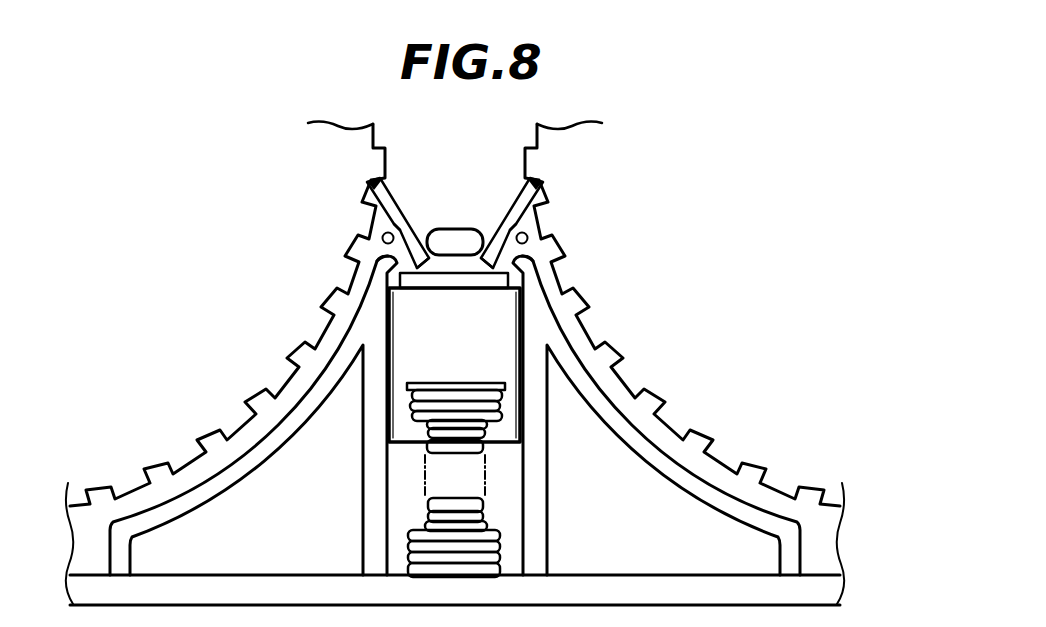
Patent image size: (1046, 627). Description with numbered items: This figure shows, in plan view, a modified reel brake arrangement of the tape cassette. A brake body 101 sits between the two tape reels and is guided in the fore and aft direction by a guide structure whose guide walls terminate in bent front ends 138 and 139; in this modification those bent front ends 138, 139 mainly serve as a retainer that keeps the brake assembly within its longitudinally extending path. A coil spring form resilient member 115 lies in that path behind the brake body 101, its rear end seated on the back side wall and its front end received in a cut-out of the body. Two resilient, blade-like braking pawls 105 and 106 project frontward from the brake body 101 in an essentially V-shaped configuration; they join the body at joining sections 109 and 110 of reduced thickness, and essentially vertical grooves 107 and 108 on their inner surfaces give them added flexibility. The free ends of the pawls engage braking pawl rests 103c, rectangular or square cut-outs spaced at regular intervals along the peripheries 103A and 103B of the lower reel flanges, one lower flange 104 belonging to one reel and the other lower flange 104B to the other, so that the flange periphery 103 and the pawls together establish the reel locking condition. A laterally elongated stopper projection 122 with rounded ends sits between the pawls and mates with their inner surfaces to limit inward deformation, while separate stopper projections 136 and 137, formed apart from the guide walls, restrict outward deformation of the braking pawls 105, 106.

The brake body 101 is at (410, 366).
The arched body 103 is at (541, 468).
The periphery 103A is at (733, 453).
The periphery 103B is at (180, 445).
The braking pawl rest 103c is at (257, 389).
The support column wall 104 is at (373, 510).
The lower flange 104B is at (243, 297).
The braking pawl 105 is at (545, 188).
The braking pawl 106 is at (372, 184).
The groove 107 is at (510, 226).
The groove 108 is at (400, 226).
The joining section 109 is at (488, 264).
The joining section 110 is at (423, 264).
The coil spring form resilient member 115 is at (487, 508).
The stopper projection 122 is at (455, 240).
The stopper projection 136 is at (528, 240).
The stopper projection 137 is at (382, 237).
The bent front end 138 is at (540, 265).
The bent front end 139 is at (380, 268).